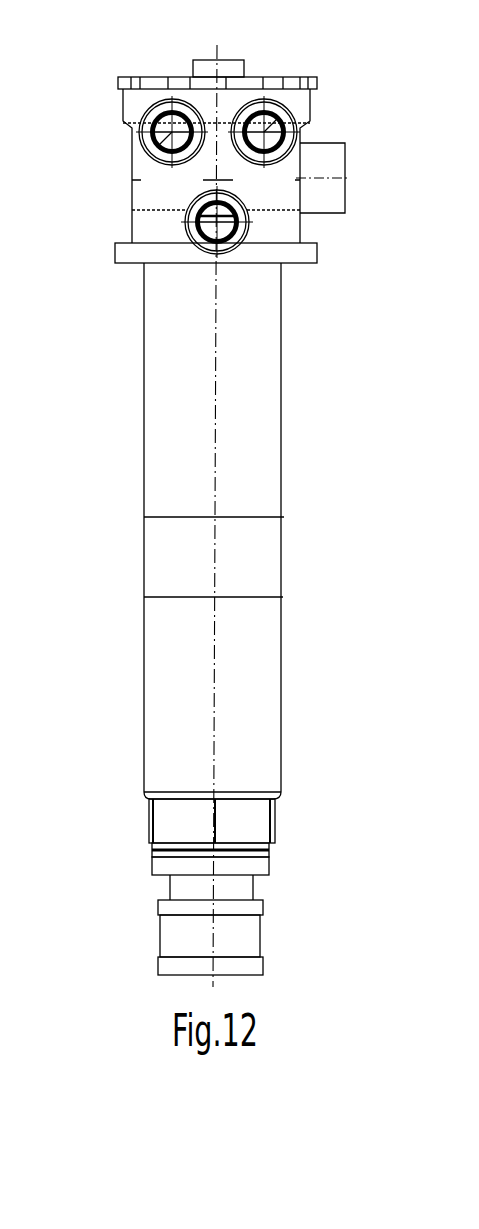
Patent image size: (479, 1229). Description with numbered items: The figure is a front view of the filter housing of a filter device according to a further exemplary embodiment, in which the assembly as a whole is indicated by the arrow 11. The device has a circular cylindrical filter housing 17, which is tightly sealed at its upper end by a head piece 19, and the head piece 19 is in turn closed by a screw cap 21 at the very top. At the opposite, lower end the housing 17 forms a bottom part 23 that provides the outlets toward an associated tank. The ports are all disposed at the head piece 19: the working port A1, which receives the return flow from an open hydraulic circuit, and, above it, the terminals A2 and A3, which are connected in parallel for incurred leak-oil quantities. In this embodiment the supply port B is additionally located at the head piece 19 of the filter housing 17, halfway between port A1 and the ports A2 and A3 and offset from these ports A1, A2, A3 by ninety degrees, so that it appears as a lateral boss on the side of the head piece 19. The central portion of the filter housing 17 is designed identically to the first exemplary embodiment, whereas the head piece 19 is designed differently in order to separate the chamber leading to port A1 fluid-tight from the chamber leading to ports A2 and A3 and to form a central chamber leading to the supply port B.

The coolant distributor assembly 11 is at (143, 925).
The filter housing 17 is at (145, 362).
The head piece 19 is at (131, 190).
The screw cap 21 is at (160, 77).
The bottom part 23 is at (272, 850).
The working port A1 is at (197, 218).
The terminal A2 is at (275, 112).
The terminal A3 is at (147, 117).
The supply port B is at (322, 160).